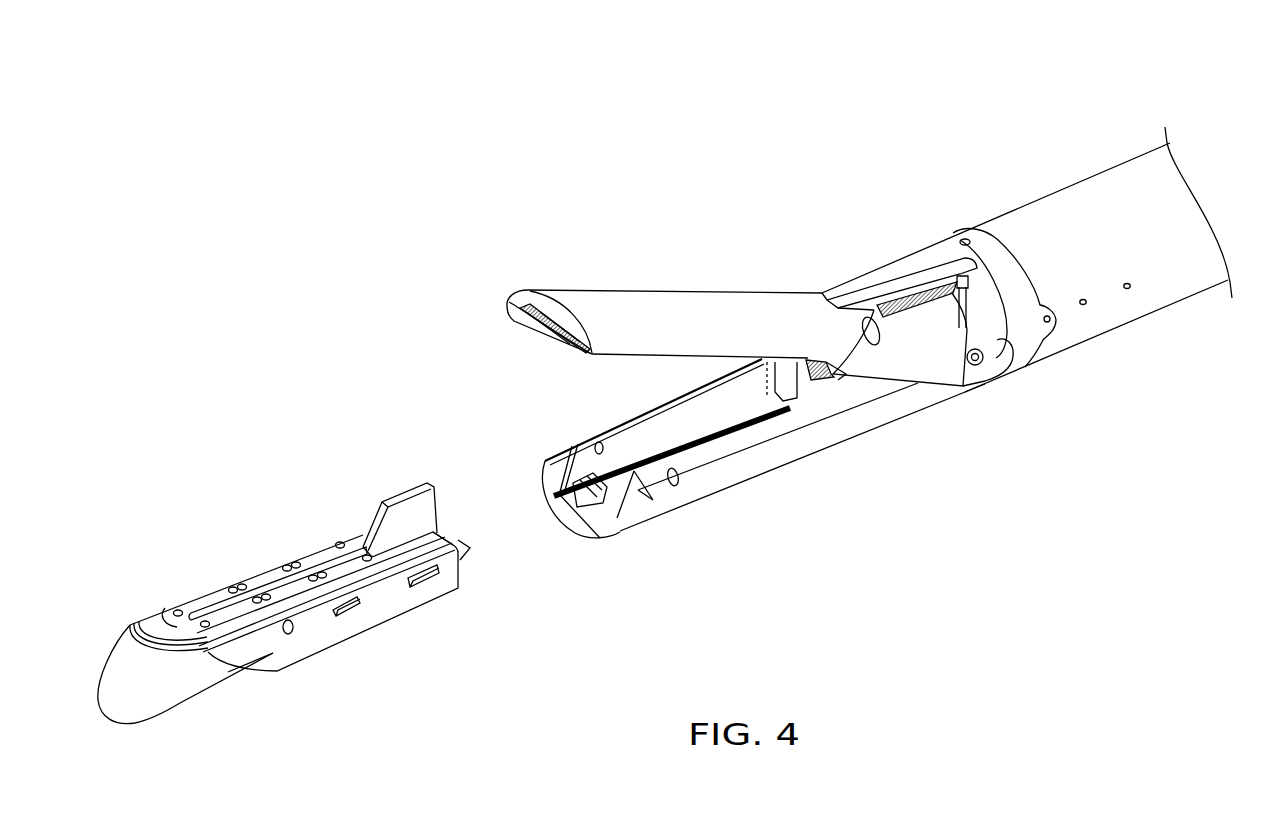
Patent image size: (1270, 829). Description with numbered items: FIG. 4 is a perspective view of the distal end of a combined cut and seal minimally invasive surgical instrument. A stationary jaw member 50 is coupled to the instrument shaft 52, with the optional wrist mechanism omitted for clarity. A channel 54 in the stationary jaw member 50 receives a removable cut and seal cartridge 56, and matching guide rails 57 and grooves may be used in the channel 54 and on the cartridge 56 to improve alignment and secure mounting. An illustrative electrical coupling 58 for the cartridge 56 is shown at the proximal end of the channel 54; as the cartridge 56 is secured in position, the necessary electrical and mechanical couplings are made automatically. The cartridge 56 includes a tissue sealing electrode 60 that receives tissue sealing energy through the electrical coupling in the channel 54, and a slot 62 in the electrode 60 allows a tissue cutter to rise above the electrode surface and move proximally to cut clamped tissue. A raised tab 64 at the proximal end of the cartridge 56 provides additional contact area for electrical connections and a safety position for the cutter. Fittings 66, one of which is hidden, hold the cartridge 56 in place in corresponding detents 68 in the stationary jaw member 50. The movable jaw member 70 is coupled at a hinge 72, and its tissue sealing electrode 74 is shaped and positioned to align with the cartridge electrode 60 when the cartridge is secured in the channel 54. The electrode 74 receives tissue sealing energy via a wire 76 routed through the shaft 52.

The stationary jaw member 50 is at (688, 504).
The instrument shaft 52 is at (1067, 320).
The channel 54 is at (627, 411).
The cut and seal cartridge 56 is at (186, 704).
The guide rails 57 is at (348, 613).
The electrical coupling 58 is at (813, 384).
The tissue sealing electrode 60 is at (213, 611).
The slot 62 is at (280, 594).
The raised tab 64 is at (390, 502).
The fittings 66 is at (261, 636).
The detents 68 is at (643, 537).
The movable jaw member 70 is at (600, 289).
The hinge 72 is at (877, 316).
The tissue sealing electrode 74 is at (534, 333).
The wire 76 is at (933, 288).